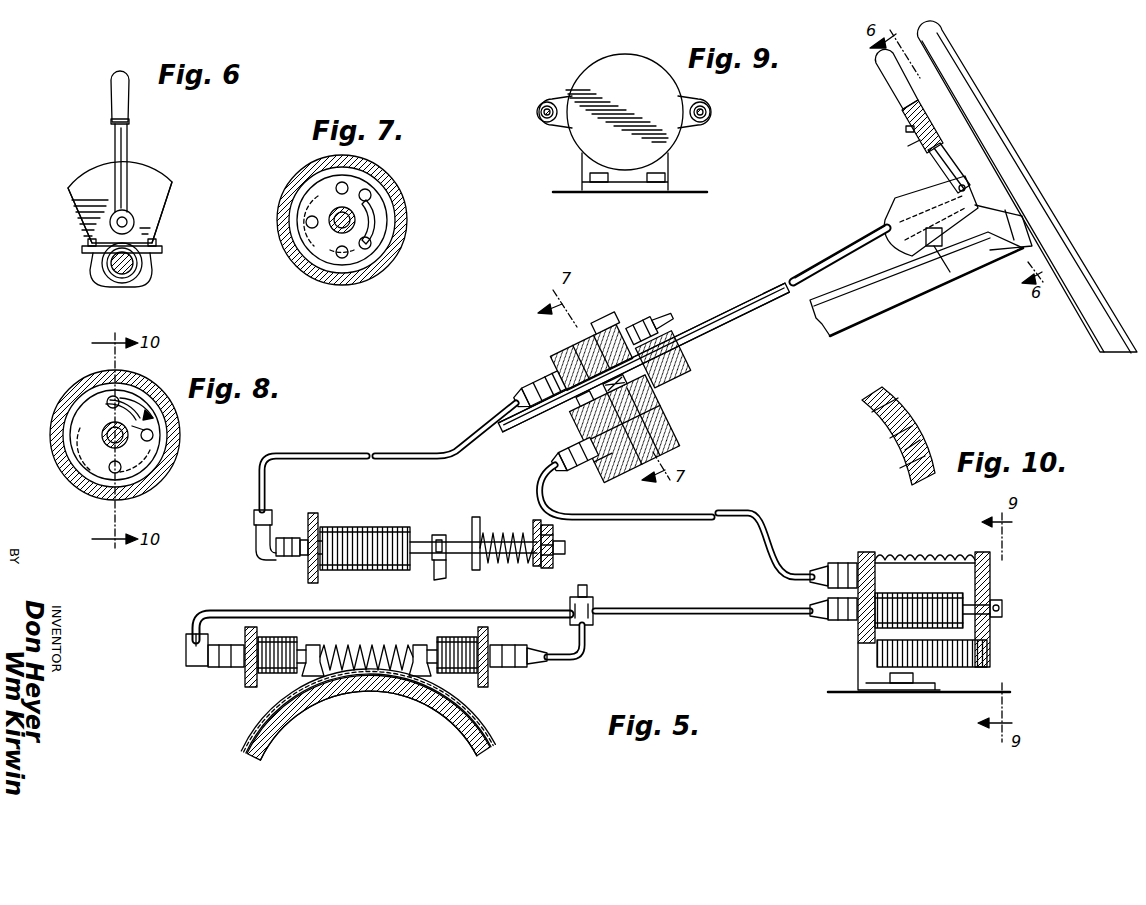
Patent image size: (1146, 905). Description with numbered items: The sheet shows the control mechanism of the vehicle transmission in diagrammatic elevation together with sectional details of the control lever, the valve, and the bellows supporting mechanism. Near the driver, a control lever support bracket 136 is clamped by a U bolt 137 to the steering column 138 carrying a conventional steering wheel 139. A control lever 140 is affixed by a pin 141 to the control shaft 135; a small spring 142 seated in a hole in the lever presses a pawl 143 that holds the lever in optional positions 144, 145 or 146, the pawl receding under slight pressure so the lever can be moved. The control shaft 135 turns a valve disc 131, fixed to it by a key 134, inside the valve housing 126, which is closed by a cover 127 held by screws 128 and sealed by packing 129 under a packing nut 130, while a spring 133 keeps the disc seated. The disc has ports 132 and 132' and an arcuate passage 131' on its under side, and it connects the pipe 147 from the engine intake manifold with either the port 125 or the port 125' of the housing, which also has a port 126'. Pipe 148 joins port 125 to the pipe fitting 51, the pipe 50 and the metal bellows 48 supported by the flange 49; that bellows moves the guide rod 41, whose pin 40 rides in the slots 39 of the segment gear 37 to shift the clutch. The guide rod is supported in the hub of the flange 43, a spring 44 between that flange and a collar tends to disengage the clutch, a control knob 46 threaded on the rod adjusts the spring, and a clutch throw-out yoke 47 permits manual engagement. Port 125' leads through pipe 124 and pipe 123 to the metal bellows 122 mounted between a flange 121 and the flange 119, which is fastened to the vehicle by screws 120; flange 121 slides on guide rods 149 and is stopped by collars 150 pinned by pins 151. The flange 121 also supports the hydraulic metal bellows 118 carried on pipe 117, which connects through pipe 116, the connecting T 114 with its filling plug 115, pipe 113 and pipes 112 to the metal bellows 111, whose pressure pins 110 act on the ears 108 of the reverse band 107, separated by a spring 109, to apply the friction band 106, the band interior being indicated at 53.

In FIG. 5, the segment gear 37 is at (446, 575).
In FIG. 5, the slots 39 is at (432, 566).
In FIG. 5, the pin 40 is at (440, 535).
In FIG. 5, the guide rod 41 is at (565, 551).
In FIG. 5, the flange 43 is at (481, 569).
In FIG. 5, the spring 44 is at (502, 535).
In FIG. 5, the control knob 46 is at (555, 542).
In FIG. 5, the clutch throw-out yoke 47 is at (537, 520).
In FIG. 5, the metal bellows 48 is at (386, 526).
In FIG. 5, the flange 49 is at (310, 520).
In FIG. 5, the pipe 50 is at (302, 560).
In FIG. 5, the pipe fitting 51 is at (258, 523).
In FIG. 5, the brake band inner surface 53 is at (333, 695).
In FIG. 5, the friction band 106 is at (247, 753).
In FIG. 5, the reverse band 107 is at (252, 731).
In FIG. 5, the ears 108 is at (313, 646).
In FIG. 5, the spring 109 is at (385, 651).
In FIG. 5, the pressure pins 110 is at (301, 645).
In FIG. 5, the metal bellows 111 is at (279, 636).
In FIG. 5, the pipes 112 is at (233, 669).
In FIG. 5, the pipe 113 is at (247, 610).
In FIG. 5, the connecting T 114 is at (594, 622).
In FIG. 5, the plug 115 is at (588, 590).
In FIG. 5, the pipe 116 is at (716, 608).
In FIG. 5, the pipe 117 is at (851, 619).
In FIG. 5, the metal bellows 118 is at (936, 594).
In FIG. 9, the flange 119 is at (582, 176).
In FIG. 5, the flange 119 is at (858, 681).
In FIG. 9, the screws 120 is at (598, 184).
In FIG. 5, the screws 120 is at (901, 685).
In FIG. 9, the flange 121 is at (622, 60).
In FIG. 5, the flange 121 is at (992, 589).
In FIG. 5, the metal bellows 122 is at (952, 552).
In FIG. 5, the pipe 123 is at (846, 564).
In FIG. 5, the pipe 124 is at (741, 512).
In FIG. 7, the port 125 is at (302, 172).
In FIG. 8, the port 125 is at (91, 382).
In FIG. 5, the port 125 is at (539, 406).
In FIG. 7, the port 125' is at (344, 284).
In FIG. 8, the port 125' is at (134, 488).
In FIG. 5, the port 125' is at (577, 466).
In FIG. 7, the valve housing 126 is at (322, 220).
In FIG. 8, the valve housing 126 is at (137, 435).
In FIG. 5, the valve housing 126 is at (642, 429).
In FIG. 7, the port 126' is at (313, 223).
In FIG. 8, the port 126' is at (87, 435).
In FIG. 5, the cover 127 is at (668, 417).
In FIG. 5, the screws 128 is at (624, 320).
In FIG. 5, the packing 129 is at (658, 396).
In FIG. 5, the packing nut 130 is at (698, 371).
In FIG. 7, the valve disc 131 is at (391, 240).
In FIG. 8, the valve disc 131 is at (163, 473).
In FIG. 10, the valve disc 131 is at (872, 424).
In FIG. 5, the valve disc 131 is at (640, 441).
In FIG. 7, the arcuate passage 131' is at (278, 210).
In FIG. 8, the arcuate passage 131' is at (62, 462).
In FIG. 10, the arcuate passage 131' is at (889, 477).
In FIG. 5, the arcuate passage 131' is at (583, 416).
In FIG. 7, the port 132 is at (383, 176).
In FIG. 8, the port 132 is at (142, 397).
In FIG. 10, the port 132 is at (893, 424).
In FIG. 7, the port 132' is at (369, 270).
In FIG. 8, the port 132' is at (174, 448).
In FIG. 5, the spring 133 is at (583, 394).
In FIG. 7, the key 134 is at (338, 232).
In FIG. 8, the key 134 is at (112, 456).
In FIG. 5, the key 134 is at (572, 433).
In FIG. 6, the control shaft 135 is at (129, 216).
In FIG. 7, the control shaft 135 is at (368, 220).
In FIG. 8, the control shaft 135 is at (100, 424).
In FIG. 5, the control shaft 135 is at (826, 266).
In FIG. 6, the control lever support bracket 136 is at (160, 212).
In FIG. 5, the control lever support bracket 136 is at (896, 207).
In FIG. 6, the U bolt 137 is at (96, 272).
In FIG. 5, the U bolt 137 is at (950, 276).
In FIG. 6, the steering column 138 is at (113, 288).
In FIG. 5, the steering column 138 is at (866, 312).
In FIG. 5, the steering wheel 139 is at (1005, 190).
In FIG. 6, the control lever 140 is at (115, 130).
In FIG. 5, the control lever 140 is at (936, 134).
In FIG. 5, the pin 141 is at (984, 176).
In FIG. 5, the spring 142 is at (906, 130).
In FIG. 5, the pawl 143 is at (910, 146).
In FIG. 6, the position 144 is at (126, 164).
In FIG. 6, the position 145 is at (168, 182).
In FIG. 6, the position 146 is at (76, 182).
In FIG. 5, the pipe 147 is at (661, 318).
In FIG. 5, the pipe 148 is at (389, 452).
In FIG. 9, the guide rods 149 is at (548, 104).
In FIG. 5, the guide rods 149 is at (1003, 607).
In FIG. 9, the collars 150 is at (548, 122).
In FIG. 5, the collars 150 is at (1003, 615).
In FIG. 9, the pins 151 is at (538, 116).